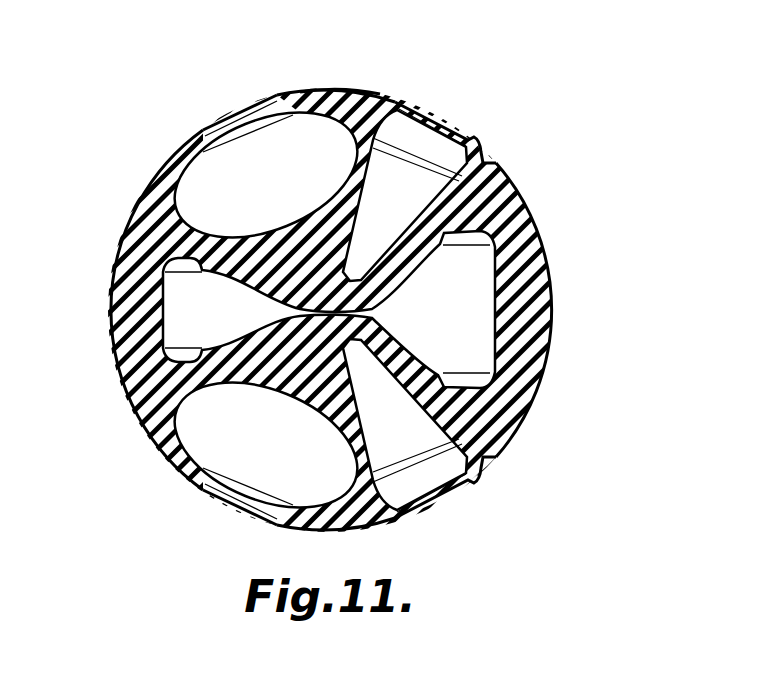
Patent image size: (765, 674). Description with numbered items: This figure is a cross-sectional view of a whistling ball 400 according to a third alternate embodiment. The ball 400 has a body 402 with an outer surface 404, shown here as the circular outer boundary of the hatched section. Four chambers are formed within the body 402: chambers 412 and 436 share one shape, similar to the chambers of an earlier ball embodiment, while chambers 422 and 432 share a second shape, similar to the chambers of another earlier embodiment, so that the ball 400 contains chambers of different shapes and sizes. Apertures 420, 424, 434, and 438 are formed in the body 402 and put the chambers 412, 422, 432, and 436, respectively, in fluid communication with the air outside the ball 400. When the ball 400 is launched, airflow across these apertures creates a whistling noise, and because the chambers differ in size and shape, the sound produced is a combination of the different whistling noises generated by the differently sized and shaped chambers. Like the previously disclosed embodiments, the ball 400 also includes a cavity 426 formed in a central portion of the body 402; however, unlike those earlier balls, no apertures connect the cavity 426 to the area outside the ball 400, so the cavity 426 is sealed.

The ball 400 is at (574, 128).
The body 402 is at (526, 200).
The outer surface 404 is at (350, 88).
The chamber 412 is at (210, 190).
The aperture 420 is at (205, 118).
The chamber 422 is at (400, 178).
The aperture 424 is at (476, 133).
The cavity 426 is at (463, 300).
The chamber 432 is at (417, 425).
The aperture 434 is at (468, 482).
The chamber 436 is at (210, 422).
The aperture 438 is at (207, 487).